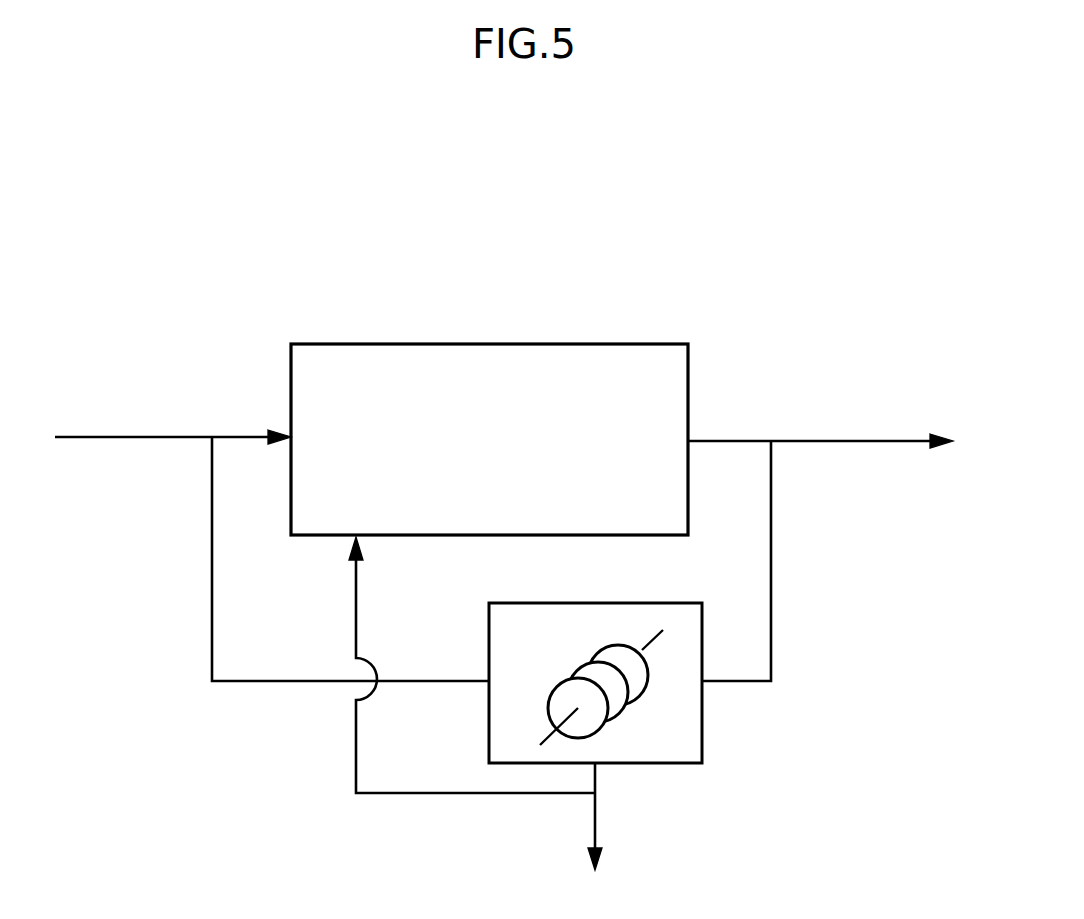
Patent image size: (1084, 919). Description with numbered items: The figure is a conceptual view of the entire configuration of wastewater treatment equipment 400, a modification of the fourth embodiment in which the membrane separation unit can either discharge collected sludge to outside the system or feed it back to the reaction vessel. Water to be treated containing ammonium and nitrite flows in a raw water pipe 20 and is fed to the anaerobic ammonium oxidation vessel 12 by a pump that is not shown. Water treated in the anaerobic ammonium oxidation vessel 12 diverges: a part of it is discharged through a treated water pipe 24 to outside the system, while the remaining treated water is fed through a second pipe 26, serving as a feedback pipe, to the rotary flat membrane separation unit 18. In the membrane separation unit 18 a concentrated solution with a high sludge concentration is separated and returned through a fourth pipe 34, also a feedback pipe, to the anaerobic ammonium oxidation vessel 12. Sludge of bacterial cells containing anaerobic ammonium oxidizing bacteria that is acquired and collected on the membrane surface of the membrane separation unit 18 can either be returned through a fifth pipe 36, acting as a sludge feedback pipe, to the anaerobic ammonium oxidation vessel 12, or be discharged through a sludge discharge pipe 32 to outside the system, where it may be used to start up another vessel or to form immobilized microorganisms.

The wastewater treatment equipment 400 is at (749, 271).
The anaerobic ammonium oxidation vessel 12 is at (500, 344).
The rotary flat membrane separation unit 18 is at (607, 646).
The raw water pipe 20 is at (118, 438).
The treated water pipe 24 is at (887, 443).
The second pipe 26 is at (772, 592).
The sludge discharge pipe 32 is at (596, 826).
The fourth pipe 34 is at (428, 680).
The fifth pipe 36 is at (428, 792).